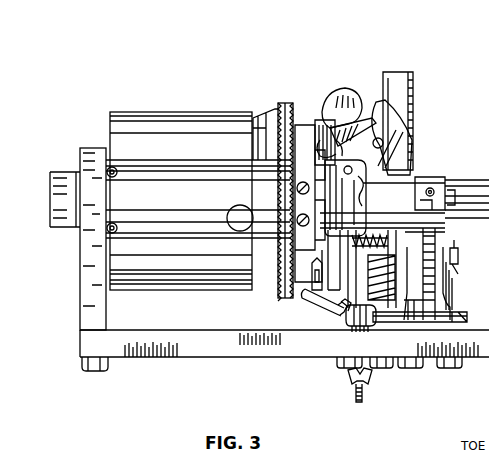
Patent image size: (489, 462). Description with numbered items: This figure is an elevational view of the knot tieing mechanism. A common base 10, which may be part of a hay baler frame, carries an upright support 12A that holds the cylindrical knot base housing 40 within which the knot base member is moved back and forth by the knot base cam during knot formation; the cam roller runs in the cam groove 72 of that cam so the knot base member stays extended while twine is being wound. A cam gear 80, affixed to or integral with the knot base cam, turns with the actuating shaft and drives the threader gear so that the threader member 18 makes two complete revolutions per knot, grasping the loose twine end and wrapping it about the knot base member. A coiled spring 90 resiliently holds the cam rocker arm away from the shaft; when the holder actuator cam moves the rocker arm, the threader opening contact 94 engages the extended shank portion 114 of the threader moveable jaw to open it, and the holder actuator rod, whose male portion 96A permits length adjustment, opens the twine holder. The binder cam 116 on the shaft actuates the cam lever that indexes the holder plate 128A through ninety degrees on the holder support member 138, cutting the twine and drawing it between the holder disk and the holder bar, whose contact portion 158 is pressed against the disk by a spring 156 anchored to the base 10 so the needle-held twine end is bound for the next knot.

The common base 10 is at (458, 315).
The upright support 12A is at (90, 306).
The threader member 18 is at (343, 208).
The knot base housing 40 is at (196, 166).
The cam groove 72 is at (264, 105).
The cam gear 80 is at (285, 103).
The coiled spring 90 is at (375, 232).
The threader opening contact 94 is at (316, 128).
The male portion of holder actuator rod 96A is at (353, 327).
The extended shank portion 114 is at (295, 173).
The binder cam 116 is at (436, 178).
The holder plate 128A is at (398, 126).
The holder support member 138 is at (408, 72).
The spring 156 is at (339, 318).
The contact portion 158 is at (352, 110).